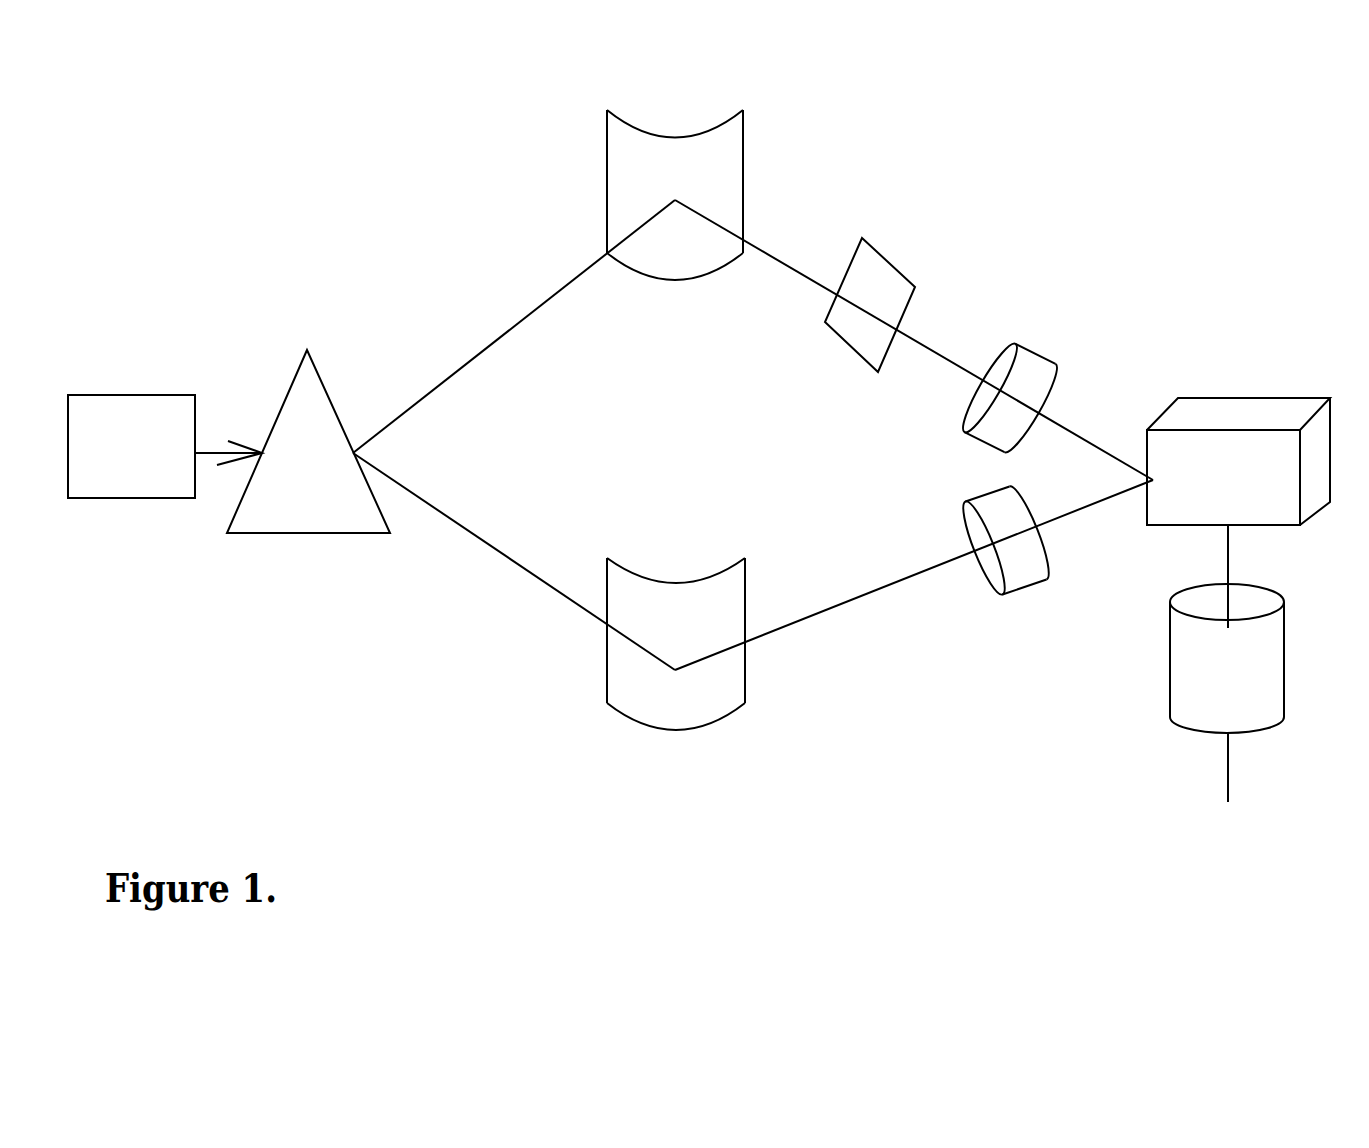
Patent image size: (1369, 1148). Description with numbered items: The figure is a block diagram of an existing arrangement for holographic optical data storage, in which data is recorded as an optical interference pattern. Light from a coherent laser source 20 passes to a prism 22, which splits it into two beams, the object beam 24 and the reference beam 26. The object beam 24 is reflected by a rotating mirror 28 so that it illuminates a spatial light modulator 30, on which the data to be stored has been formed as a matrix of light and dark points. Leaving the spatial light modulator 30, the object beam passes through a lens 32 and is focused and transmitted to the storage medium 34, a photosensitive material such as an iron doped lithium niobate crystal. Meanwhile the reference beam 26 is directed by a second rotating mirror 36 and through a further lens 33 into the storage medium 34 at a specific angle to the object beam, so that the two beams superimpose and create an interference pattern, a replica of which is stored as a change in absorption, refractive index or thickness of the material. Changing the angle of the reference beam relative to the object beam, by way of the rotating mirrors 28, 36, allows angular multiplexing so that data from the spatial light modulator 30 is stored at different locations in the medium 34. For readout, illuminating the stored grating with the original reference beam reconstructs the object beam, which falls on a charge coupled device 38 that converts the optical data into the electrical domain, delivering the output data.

The coherent laser source 20 is at (123, 395).
The prism 22 is at (307, 347).
The object beam 24 is at (562, 280).
The reference beam 26 is at (505, 567).
The mirror 28 is at (745, 193).
The spatial light modulator (SLM) 30 is at (938, 242).
The lens 32 is at (1065, 297).
The lens 33 is at (963, 523).
The recording medium 34 is at (1257, 397).
The rotating mirror 36 is at (678, 578).
The charge coupled device 38 is at (1170, 670).